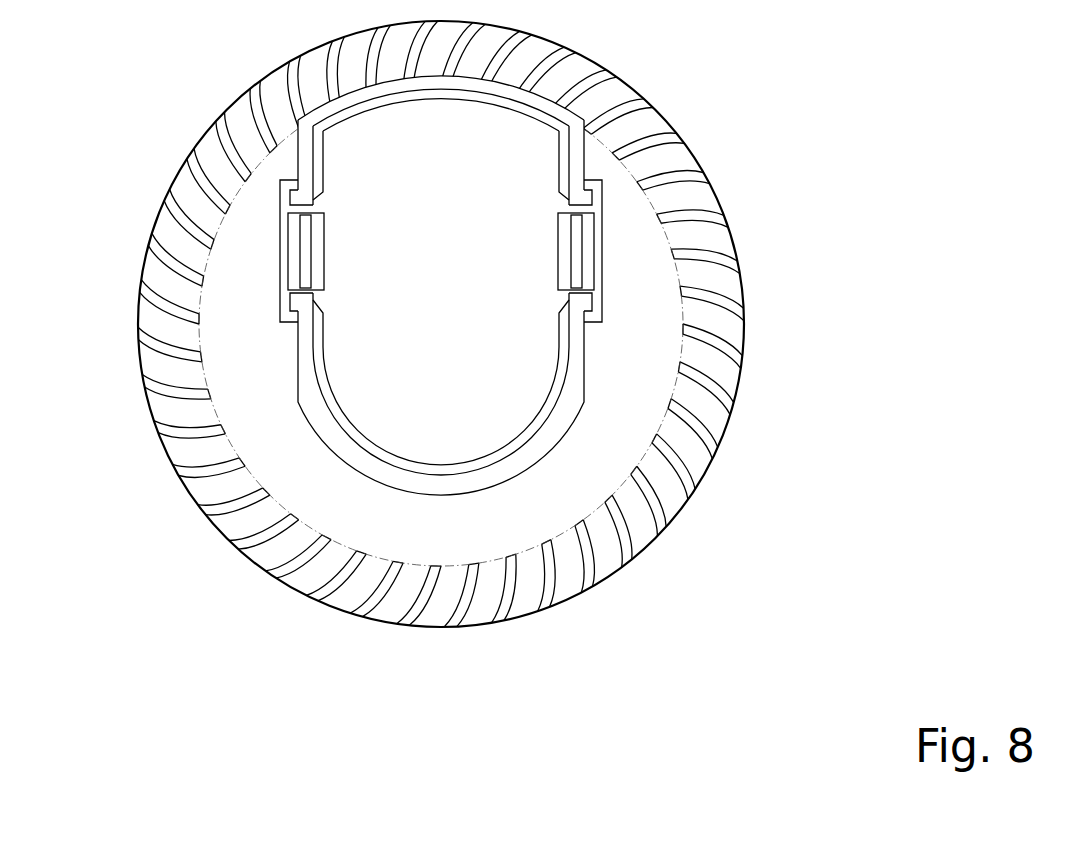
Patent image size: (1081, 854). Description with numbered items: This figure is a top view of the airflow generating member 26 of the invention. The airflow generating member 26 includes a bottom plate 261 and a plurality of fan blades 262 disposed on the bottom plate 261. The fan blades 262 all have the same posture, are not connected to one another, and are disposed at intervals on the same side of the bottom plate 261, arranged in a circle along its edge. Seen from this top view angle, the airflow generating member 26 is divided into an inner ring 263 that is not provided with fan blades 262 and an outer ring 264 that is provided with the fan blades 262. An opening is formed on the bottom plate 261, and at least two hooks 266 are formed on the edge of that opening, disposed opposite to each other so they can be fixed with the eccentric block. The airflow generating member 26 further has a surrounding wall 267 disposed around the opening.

The airflow generating member 26 is at (672, 122).
The bottom plate 261 is at (607, 442).
The fan blades 262 is at (160, 312).
The inner ring 263 is at (262, 434).
The outer ring 264 is at (203, 134).
The hooks 266 is at (318, 247).
The surrounding wall 267 is at (574, 360).